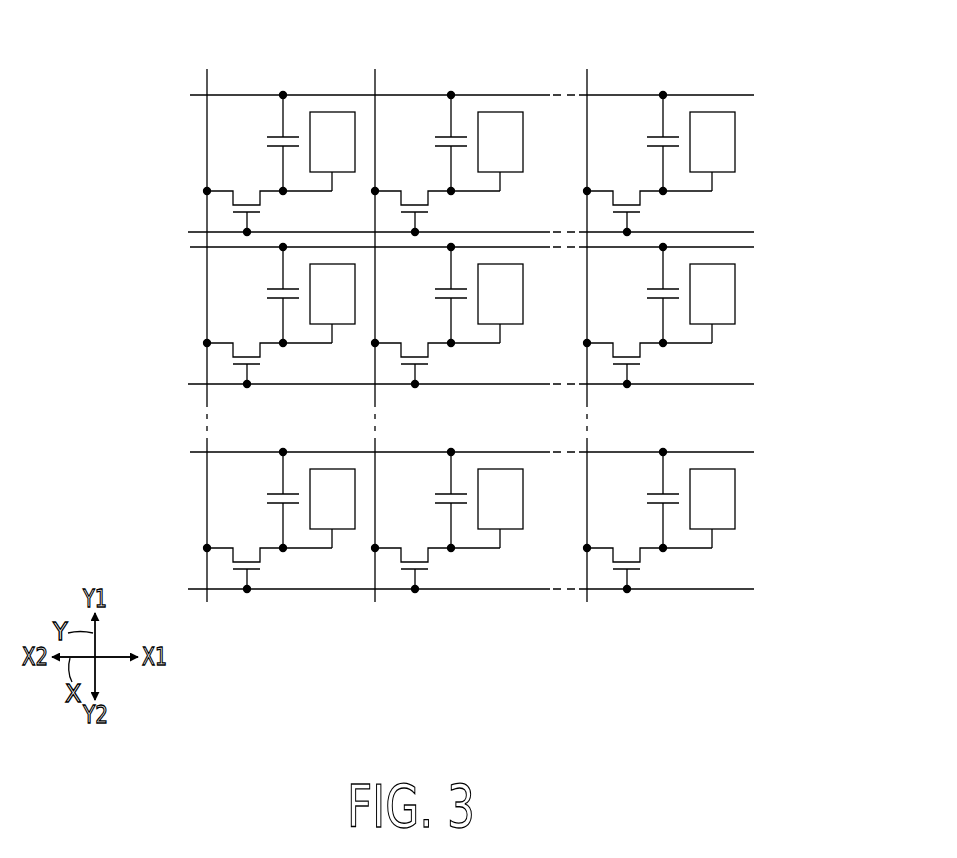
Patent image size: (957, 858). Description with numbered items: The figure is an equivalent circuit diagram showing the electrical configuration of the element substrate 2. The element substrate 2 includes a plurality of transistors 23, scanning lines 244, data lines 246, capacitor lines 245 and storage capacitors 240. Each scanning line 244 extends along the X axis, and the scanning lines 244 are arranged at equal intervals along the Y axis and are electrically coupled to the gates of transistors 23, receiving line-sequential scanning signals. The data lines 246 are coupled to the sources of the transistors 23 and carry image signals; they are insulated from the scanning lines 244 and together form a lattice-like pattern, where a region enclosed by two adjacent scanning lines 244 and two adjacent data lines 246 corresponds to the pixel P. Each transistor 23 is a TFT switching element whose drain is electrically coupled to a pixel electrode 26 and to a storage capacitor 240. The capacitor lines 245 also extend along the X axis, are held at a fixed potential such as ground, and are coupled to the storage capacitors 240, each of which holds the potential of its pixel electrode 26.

The element substrate 2 is at (762, 91).
The transistor 23 is at (273, 212).
The pixel electrode 26 is at (332, 112).
The storage capacitor 240 is at (258, 143).
The scanning line 244 is at (202, 230).
The capacitor line 245 is at (203, 94).
The data line 246 is at (212, 88).
The pixel P is at (220, 148).